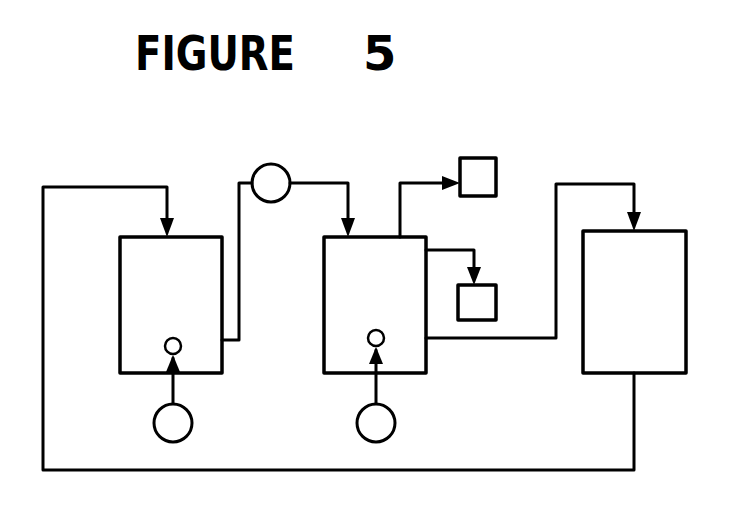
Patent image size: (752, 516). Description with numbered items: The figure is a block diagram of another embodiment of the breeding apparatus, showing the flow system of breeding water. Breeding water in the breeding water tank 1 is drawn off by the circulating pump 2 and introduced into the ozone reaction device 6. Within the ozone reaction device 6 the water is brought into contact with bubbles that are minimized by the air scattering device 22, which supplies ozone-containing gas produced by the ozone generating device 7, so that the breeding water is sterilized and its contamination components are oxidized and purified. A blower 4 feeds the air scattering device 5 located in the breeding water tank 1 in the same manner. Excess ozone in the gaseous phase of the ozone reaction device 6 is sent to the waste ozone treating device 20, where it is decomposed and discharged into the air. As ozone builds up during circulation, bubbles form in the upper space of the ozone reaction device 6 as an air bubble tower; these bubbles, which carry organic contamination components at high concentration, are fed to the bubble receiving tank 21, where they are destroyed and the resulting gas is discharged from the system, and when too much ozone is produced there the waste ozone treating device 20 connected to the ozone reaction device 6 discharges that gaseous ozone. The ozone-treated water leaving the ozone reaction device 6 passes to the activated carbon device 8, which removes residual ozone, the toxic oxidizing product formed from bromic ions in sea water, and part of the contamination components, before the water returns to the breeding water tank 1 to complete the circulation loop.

The breeding water tank 1 is at (136, 373).
The circulating pump 2 is at (284, 168).
The blower 4 is at (192, 423).
The air scattering device 5 is at (120, 324).
The ozone reaction device 6 is at (340, 373).
The ozone generating device 7 is at (395, 423).
The activated carbon device 8 is at (596, 373).
The waste ozone treating device 20 is at (481, 158).
The bubble receiving tank 21 is at (498, 296).
The air scattering device 22 is at (368, 336).